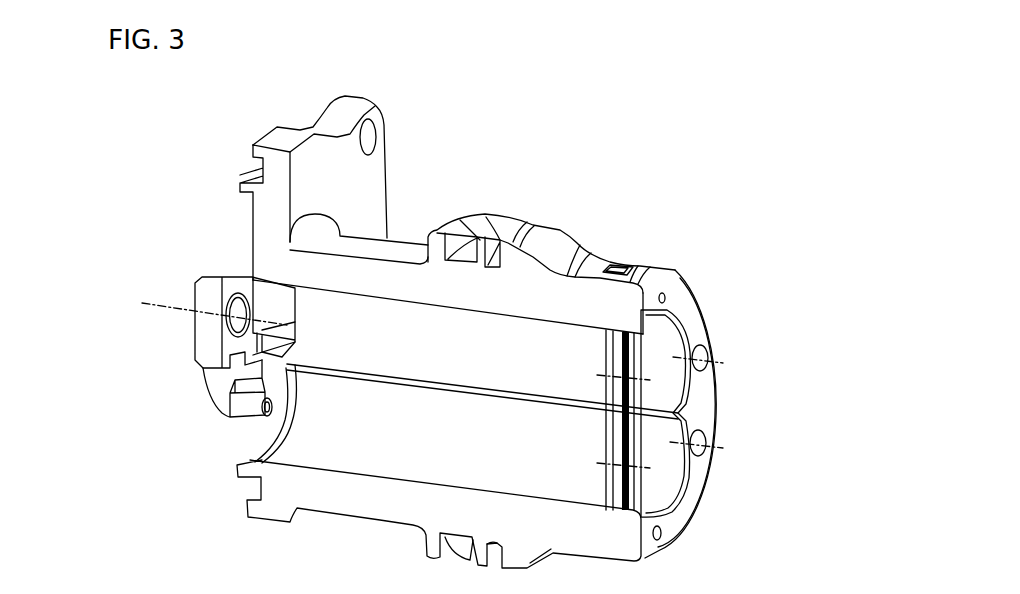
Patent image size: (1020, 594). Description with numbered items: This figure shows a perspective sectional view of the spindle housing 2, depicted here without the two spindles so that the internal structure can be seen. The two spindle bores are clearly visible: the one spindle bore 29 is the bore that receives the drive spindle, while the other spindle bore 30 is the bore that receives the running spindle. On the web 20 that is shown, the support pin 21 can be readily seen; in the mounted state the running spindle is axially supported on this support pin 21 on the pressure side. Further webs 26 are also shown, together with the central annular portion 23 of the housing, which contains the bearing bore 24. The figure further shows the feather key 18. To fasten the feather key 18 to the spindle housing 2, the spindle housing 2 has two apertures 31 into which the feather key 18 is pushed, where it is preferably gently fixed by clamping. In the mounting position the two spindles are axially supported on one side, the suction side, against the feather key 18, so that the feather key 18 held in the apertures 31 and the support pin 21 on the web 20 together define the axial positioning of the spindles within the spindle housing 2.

The spindle housing 2 is at (556, 228).
The feather key 18 is at (623, 490).
The web 20 is at (283, 395).
The support pin 21 is at (265, 417).
The central annular portion 23 is at (217, 277).
The bearing bore 24 is at (227, 330).
The webs 26 is at (243, 260).
The spindle bore 29 is at (665, 347).
The spindle bore 30 is at (660, 485).
The apertures 31 is at (628, 262).